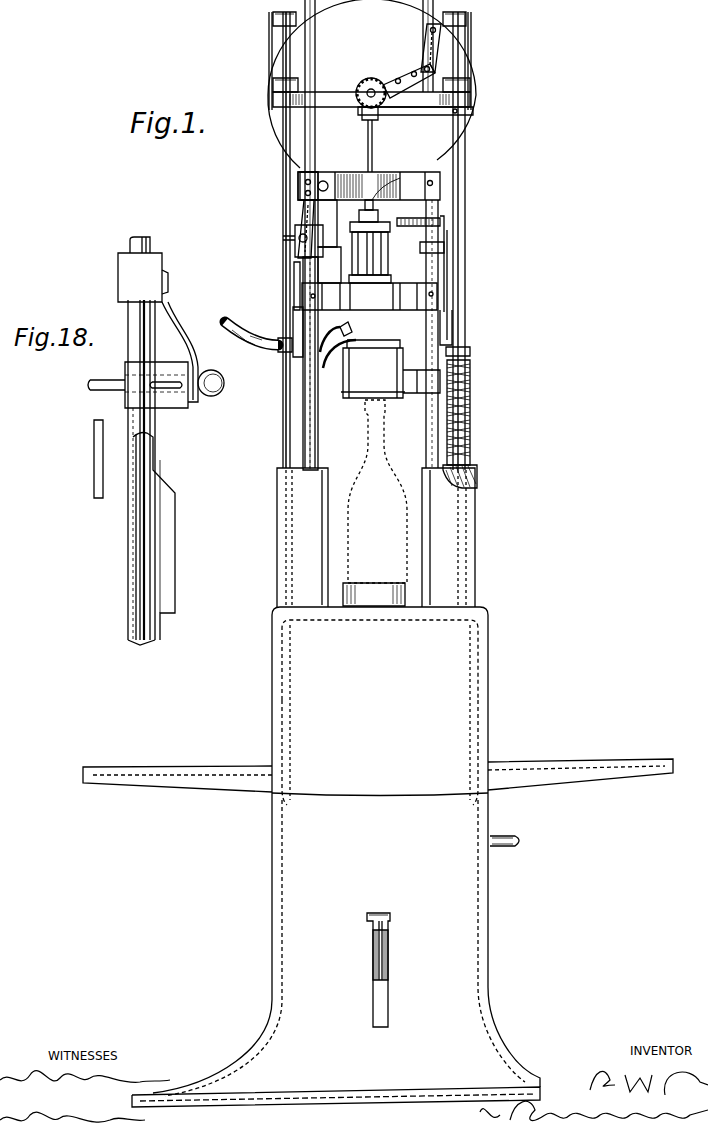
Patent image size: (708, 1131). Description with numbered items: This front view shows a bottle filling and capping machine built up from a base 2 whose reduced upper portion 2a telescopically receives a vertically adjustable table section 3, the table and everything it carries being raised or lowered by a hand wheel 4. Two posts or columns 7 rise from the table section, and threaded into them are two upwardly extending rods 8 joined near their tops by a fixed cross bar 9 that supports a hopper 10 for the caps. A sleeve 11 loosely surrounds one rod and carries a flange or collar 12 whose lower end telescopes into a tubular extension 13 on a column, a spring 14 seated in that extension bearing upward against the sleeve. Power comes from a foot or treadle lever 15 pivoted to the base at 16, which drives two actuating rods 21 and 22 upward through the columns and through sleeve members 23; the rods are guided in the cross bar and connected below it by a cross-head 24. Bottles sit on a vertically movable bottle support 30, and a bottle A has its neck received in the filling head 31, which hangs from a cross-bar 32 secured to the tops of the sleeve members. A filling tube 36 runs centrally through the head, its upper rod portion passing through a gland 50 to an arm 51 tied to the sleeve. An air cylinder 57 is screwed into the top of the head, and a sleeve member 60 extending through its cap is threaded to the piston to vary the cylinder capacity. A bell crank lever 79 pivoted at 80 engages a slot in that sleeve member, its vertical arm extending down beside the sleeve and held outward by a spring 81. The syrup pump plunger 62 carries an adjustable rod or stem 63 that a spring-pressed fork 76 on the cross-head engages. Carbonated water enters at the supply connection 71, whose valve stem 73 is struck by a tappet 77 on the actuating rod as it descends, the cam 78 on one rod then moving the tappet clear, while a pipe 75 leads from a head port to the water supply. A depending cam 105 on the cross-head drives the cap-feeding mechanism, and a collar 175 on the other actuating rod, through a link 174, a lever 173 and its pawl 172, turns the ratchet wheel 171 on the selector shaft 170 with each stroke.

In FIG. 1, the base 2 is at (336, 950).
In FIG. 1, the reduced upper portion 2a is at (470, 685).
In FIG. 1, the vertically adjustable table section 3 is at (380, 706).
In FIG. 1, the hand wheel 4 is at (520, 841).
In FIG. 1, the posts or columns 7 is at (282, 521).
In FIG. 1, the upwardly extending rods 8 is at (290, 436).
In FIG. 18, the upwardly extending rods 8 is at (141, 524).
In FIG. 1, the fixed cross bar 9 is at (352, 90).
In FIG. 1, the hopper 10 is at (272, 62).
In FIG. 1, the sleeve 11 is at (466, 233).
In FIG. 1, the flange or collar 12 is at (470, 352).
In FIG. 1, the tubular extension 13 is at (470, 392).
In FIG. 1, the spring 14 is at (468, 428).
In FIG. 1, the foot or treadle lever 15 is at (391, 917).
In FIG. 1, the pivot 16 is at (389, 973).
In FIG. 1, the actuating rod 21 is at (328, 20).
In FIG. 18, the actuating rod 21 is at (140, 237).
In FIG. 1, the actuating rod 22 is at (423, 15).
In FIG. 1, the sleeve members 23 is at (320, 458).
In FIG. 18, the sleeve members 23 is at (128, 512).
In FIG. 1, the cross-head 24 is at (352, 165).
In FIG. 18, the cross-head 24 is at (118, 277).
In FIG. 1, the bottle support 30 is at (383, 576).
In FIG. 1, the filling head 31 is at (390, 369).
In FIG. 1, the cross-bar 32 is at (405, 294).
In FIG. 1, the filling tube 36 is at (373, 147).
In FIG. 1, the gland 50 is at (379, 205).
In FIG. 1, the arm 51 is at (412, 118).
In FIG. 1, the air cylinder 57 is at (370, 257).
In FIG. 1, the sleeve member 60 is at (348, 224).
In FIG. 1, the plunger 62 is at (305, 208).
In FIG. 1, the rod or stem 63 is at (300, 190).
In FIG. 1, the supply connection 71 is at (268, 350).
In FIG. 1, the valve stem 73 is at (294, 270).
In FIG. 18, the valve stem 73 is at (94, 448).
In FIG. 1, the pipe 75 is at (357, 330).
In FIG. 1, the spring-pressed fork 76 is at (345, 210).
In FIG. 1, the tappet 77 is at (297, 252).
In FIG. 18, the tappet 77 is at (90, 386).
In FIG. 1, the cam 78 is at (293, 307).
In FIG. 18, the cam 78 is at (168, 548).
In FIG. 1, the bell crank lever 79 is at (423, 255).
In FIG. 1, the pivot 80 is at (442, 218).
In FIG. 1, the spring 81 is at (448, 322).
In FIG. 1, the depending cam 105 is at (392, 175).
In FIG. 1, the shaft 170 is at (360, 112).
In FIG. 1, the ratchet wheel 171 is at (366, 78).
In FIG. 1, the pawl 172 is at (398, 78).
In FIG. 1, the lever 173 is at (425, 63).
In FIG. 1, the link 174 is at (438, 52).
In FIG. 1, the collar 175 is at (436, 30).
In FIG. 1, the bottle A is at (377, 491).